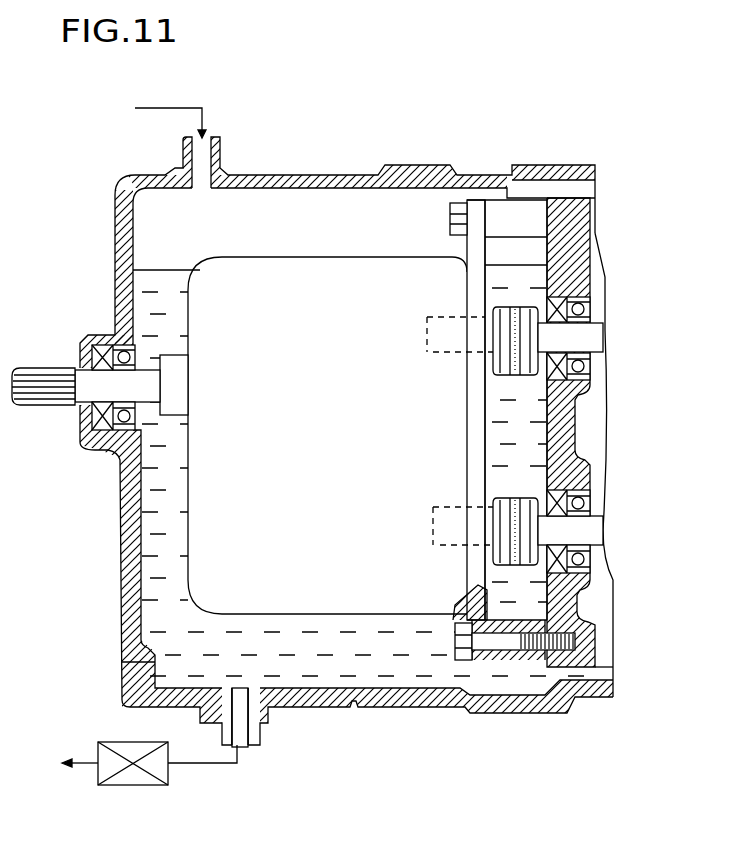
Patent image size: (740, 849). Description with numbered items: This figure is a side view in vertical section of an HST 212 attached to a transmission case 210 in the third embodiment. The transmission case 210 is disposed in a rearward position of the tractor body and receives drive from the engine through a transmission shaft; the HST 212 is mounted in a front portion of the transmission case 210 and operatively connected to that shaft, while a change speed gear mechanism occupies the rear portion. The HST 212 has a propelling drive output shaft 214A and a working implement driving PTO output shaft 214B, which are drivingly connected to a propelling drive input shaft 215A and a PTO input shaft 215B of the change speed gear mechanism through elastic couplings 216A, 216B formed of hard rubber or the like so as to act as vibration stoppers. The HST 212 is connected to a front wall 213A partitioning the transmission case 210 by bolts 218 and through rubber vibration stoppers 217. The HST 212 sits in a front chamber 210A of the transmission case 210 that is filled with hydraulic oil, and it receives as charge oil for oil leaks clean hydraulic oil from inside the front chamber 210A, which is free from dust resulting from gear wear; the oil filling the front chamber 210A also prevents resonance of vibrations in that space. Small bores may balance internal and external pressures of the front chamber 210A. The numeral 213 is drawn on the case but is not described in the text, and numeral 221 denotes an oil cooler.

The transmission case 210 is at (497, 712).
The front chamber 210A is at (296, 676).
The HST 212 is at (364, 614).
The cover 213 is at (608, 656).
The front wall 213A is at (562, 198).
The propelling drive output shaft 214A is at (430, 365).
The PTO output shaft 214B is at (437, 552).
The propelling drive input shaft 215A is at (598, 332).
The PTO input shaft 215B is at (597, 532).
The elastic coupling 216A is at (512, 305).
The elastic coupling 216B is at (510, 497).
The rubber vibration stopper 217 is at (499, 198).
The bolt 218 is at (450, 202).
The oil cooler 221 is at (110, 740).